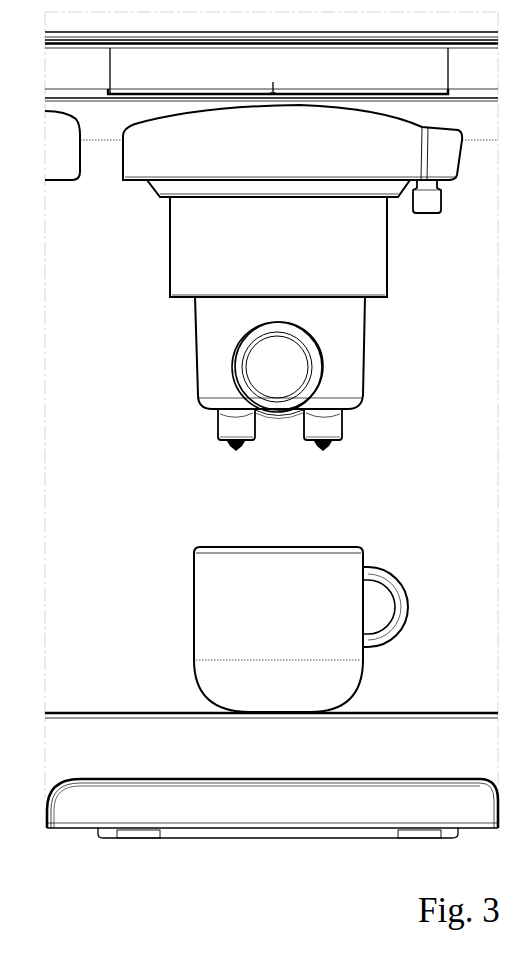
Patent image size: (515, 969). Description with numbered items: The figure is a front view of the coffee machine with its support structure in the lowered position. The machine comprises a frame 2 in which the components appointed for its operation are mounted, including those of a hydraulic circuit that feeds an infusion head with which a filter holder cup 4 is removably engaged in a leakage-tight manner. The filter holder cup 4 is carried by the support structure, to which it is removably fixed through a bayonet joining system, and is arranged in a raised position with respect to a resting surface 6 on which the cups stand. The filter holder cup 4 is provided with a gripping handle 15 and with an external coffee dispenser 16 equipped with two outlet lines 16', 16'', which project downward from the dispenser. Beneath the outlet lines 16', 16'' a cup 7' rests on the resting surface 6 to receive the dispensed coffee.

The frame 2 is at (271, 406).
The filter holder cup 4 is at (364, 351).
The gripping handle 15 is at (277, 371).
The external coffee dispenser 16 is at (279, 453).
The outlet line 16' is at (373, 462).
The outlet line 16'' is at (179, 463).
The cup 7' is at (301, 629).
The resting surface 6 is at (437, 713).